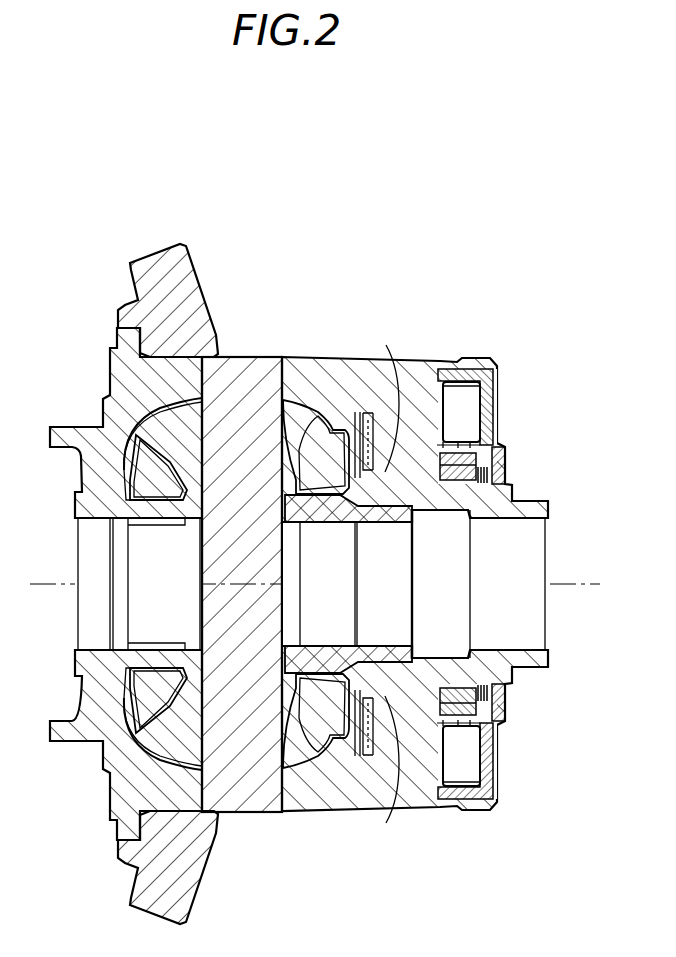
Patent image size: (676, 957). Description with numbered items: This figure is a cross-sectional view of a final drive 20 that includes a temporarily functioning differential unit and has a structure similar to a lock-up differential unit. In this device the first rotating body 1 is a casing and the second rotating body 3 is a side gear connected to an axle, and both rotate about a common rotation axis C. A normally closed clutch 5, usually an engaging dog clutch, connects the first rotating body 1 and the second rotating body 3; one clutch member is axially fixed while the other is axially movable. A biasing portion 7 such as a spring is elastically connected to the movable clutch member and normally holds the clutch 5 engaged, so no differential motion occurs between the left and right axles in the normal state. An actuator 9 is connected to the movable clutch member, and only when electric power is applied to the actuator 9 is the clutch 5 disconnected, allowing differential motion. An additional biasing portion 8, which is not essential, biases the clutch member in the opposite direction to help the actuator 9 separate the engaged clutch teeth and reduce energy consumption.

The final drive 20 is at (300, 222).
The first rotating body 1 is at (315, 812).
The clutch 5 is at (352, 338).
The second rotating body 3 is at (390, 642).
The additional biasing portion 8 is at (386, 345).
The actuator 9 is at (451, 338).
The biasing portion 7 is at (508, 479).
The rotation axis C is at (572, 579).